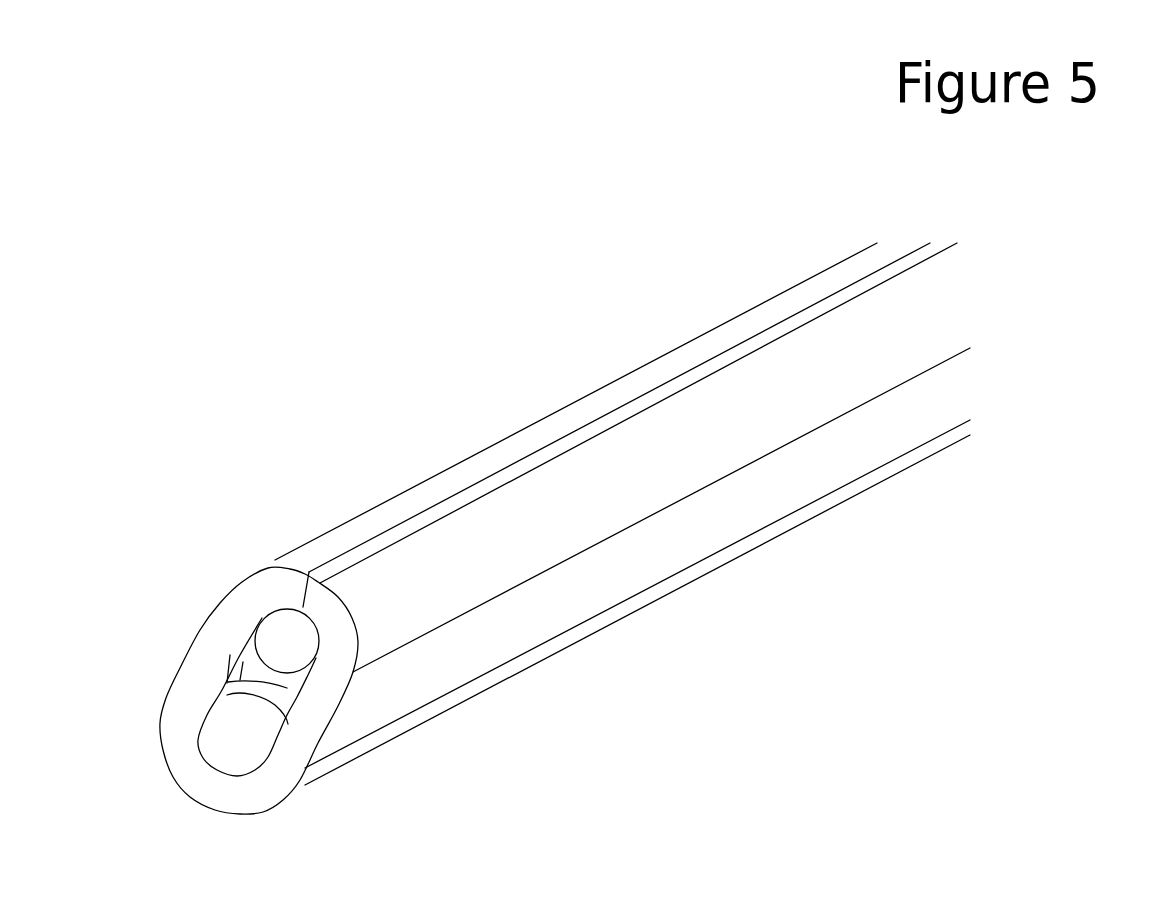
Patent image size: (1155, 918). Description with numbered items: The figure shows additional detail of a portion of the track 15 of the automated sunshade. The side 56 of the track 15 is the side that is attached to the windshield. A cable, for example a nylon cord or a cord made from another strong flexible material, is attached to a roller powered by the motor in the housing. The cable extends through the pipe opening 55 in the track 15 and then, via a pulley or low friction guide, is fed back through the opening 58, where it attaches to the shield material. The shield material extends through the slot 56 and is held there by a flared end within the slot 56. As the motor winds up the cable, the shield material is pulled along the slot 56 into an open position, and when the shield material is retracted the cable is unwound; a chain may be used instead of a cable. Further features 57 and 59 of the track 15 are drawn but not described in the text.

The track 15 is at (555, 413).
The pipe opening 55 is at (230, 743).
The side of track 56 is at (189, 660).
The partition 57 is at (248, 657).
The opening 58 is at (773, 335).
The upper lumen 59 is at (278, 632).